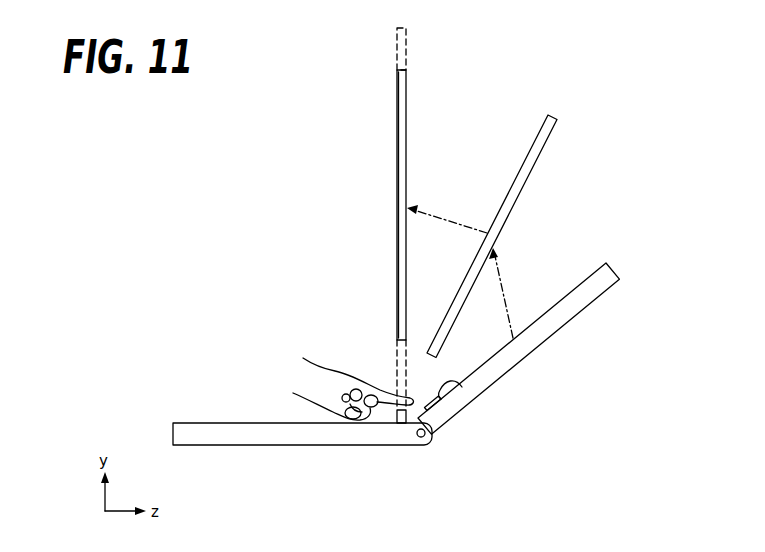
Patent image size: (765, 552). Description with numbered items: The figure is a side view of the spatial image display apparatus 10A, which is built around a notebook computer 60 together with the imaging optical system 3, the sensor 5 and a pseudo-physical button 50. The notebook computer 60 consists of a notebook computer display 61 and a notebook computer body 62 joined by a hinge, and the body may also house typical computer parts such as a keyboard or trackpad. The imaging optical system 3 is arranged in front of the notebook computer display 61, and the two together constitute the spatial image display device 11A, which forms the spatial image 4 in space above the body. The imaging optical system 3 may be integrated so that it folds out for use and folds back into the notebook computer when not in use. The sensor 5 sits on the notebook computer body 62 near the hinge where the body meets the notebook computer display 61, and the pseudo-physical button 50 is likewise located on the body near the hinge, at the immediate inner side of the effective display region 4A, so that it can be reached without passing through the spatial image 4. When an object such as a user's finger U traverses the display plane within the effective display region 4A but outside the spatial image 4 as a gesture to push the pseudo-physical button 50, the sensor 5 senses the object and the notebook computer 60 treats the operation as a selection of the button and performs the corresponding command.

The spatial image display apparatus 10A is at (644, 55).
The spatial image display device 11A is at (547, 236).
The imaging optical system 3 is at (553, 131).
The spatial image 4 is at (405, 110).
The effective display region 4A is at (403, 42).
The sensor 5 is at (393, 418).
The pseudo-physical button 50 is at (462, 387).
The notebook computer 60 is at (410, 364).
The notebook computer display 61 is at (609, 261).
The notebook computer body 62 is at (265, 444).
The user's finger U is at (330, 370).